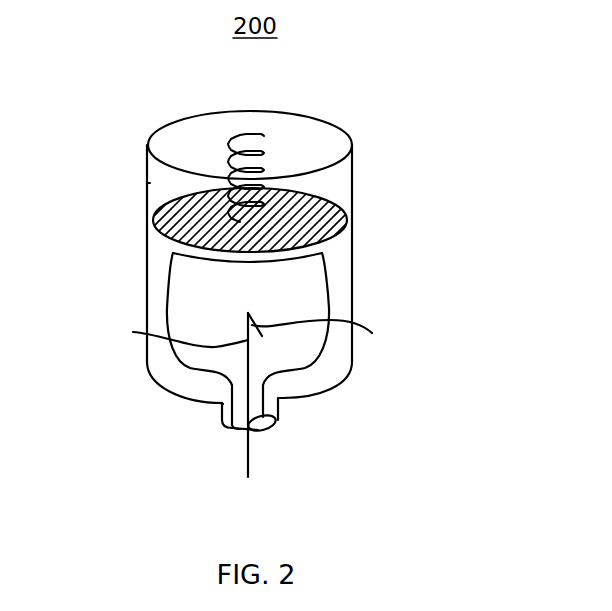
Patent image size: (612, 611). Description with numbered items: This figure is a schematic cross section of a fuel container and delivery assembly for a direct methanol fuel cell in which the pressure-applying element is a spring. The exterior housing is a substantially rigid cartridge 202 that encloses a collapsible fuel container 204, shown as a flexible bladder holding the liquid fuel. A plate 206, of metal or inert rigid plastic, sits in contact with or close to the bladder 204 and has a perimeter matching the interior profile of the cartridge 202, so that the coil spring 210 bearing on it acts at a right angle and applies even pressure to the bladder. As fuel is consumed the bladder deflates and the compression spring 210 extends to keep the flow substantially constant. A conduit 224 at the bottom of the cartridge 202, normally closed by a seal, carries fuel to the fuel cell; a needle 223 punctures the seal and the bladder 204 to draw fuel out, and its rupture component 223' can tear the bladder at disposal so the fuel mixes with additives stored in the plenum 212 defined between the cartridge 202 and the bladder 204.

The cartridge 202 is at (147, 157).
The collapsible fuel container 204 is at (322, 277).
The plate 206 is at (344, 214).
The spring 210 is at (267, 150).
The plenum 212 is at (163, 183).
The needle 223 is at (169, 334).
The rupture component 223' is at (334, 395).
The conduit 224 is at (221, 405).